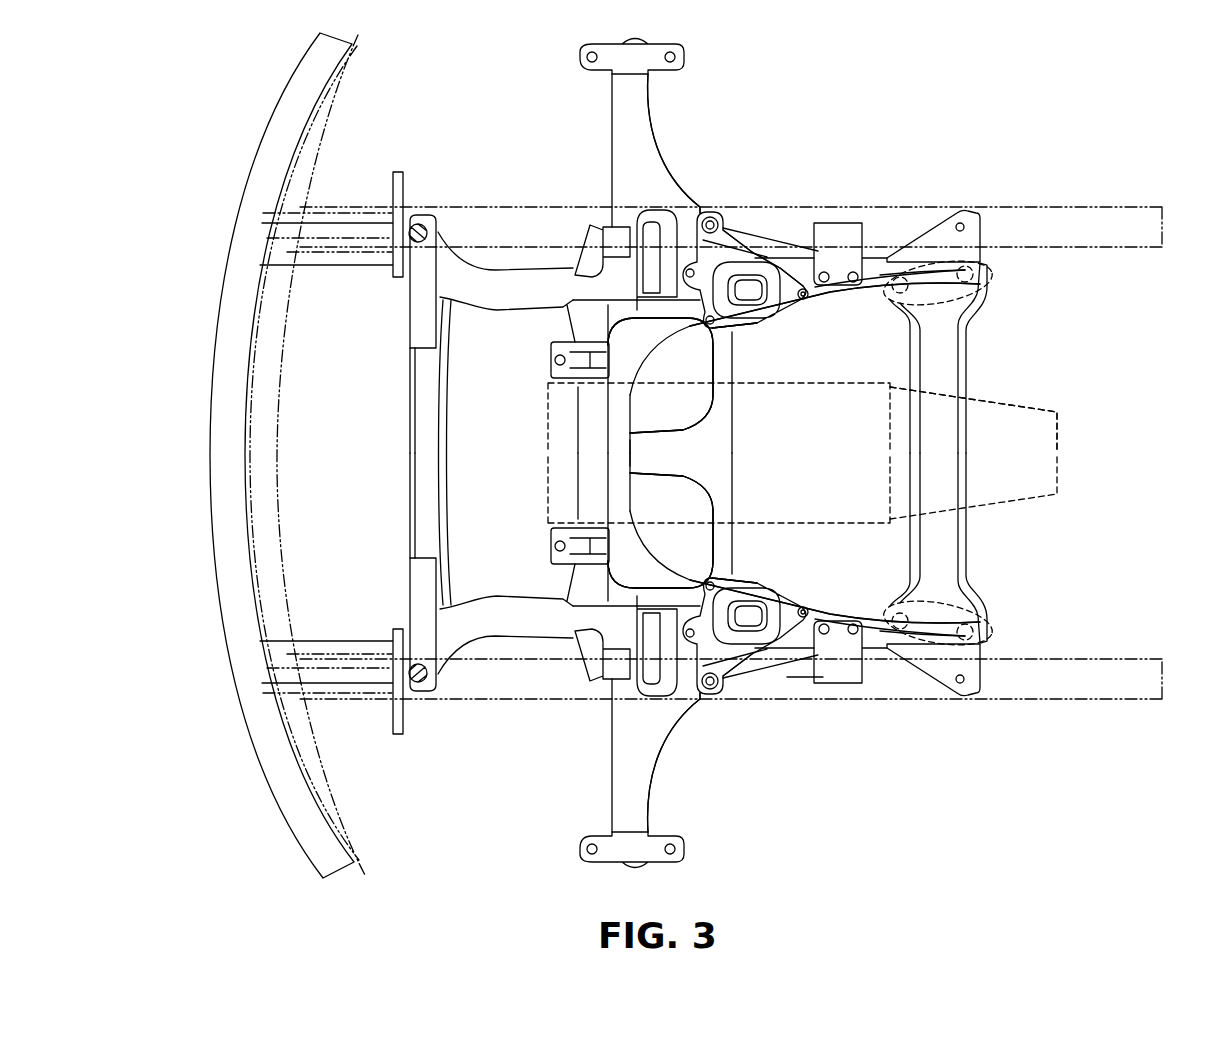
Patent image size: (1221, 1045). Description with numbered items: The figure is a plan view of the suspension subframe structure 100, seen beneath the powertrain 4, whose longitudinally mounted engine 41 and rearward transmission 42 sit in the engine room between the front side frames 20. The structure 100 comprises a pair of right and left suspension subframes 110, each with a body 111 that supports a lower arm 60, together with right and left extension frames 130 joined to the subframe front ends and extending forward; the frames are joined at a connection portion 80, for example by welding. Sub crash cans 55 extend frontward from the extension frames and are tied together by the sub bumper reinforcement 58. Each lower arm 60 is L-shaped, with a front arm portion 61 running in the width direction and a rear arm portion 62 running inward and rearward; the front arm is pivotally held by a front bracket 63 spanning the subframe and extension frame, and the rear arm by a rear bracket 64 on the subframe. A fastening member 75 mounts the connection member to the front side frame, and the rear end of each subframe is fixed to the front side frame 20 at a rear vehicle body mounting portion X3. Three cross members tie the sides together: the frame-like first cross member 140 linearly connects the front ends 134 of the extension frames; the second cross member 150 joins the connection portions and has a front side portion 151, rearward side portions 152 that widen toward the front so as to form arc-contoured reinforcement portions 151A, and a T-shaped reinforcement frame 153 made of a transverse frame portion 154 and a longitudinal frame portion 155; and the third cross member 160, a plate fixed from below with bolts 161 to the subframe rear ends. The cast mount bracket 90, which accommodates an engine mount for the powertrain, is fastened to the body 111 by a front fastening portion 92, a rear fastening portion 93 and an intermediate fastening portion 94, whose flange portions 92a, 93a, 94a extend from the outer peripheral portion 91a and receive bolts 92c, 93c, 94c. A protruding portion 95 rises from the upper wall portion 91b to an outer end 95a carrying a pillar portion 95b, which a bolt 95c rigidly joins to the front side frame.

The powertrain 4 is at (1047, 404).
The front side frame 20 is at (1120, 248).
The engine 41 is at (719, 453).
The transmission 42 is at (973, 453).
The sub crash can 55 is at (345, 220).
The sub bumper reinforcement 58 is at (210, 397).
The lower arm 60 is at (650, 100).
The front arm portion 61 is at (622, 722).
The rear arm portion 62 is at (807, 678).
The front bracket 63 is at (585, 228).
The rear bracket 64 is at (843, 228).
The fastening member 75 is at (418, 222).
The connection portion 80 is at (620, 622).
The mount bracket 90 is at (772, 233).
The outer peripheral portion 91a is at (803, 252).
The upper wall portion 91b is at (752, 318).
The front fastening portion 92 is at (698, 453).
The flange portion 92a is at (700, 205).
The bolt 92c is at (648, 228).
The rear fastening portion 93 is at (835, 453).
The flange portion 93a is at (797, 595).
The bolt 93c is at (810, 303).
The intermediate fastening portion 94 is at (714, 453).
The flange portion 94a is at (735, 338).
The bolt 94c is at (700, 333).
The protruding portion 95 is at (766, 262).
The outer end 95a is at (710, 210).
The pillar portion 95b is at (733, 240).
The bolt 95c is at (752, 232).
The suspension subframe structure 100 is at (1026, 134).
The suspension subframe 110 is at (875, 315).
The body 111 is at (842, 300).
The extension frame 130 is at (497, 269).
The front end 134 is at (440, 247).
The first cross member 140 is at (400, 456).
The second cross member 150 is at (568, 460).
The front side portion 151 is at (575, 415).
The reinforcement portion 151A is at (633, 366).
The side portion 152 is at (570, 325).
The reinforcement frame 153 is at (730, 432).
The transverse frame portion 154 is at (732, 448).
The longitudinal frame portion 155 is at (652, 457).
The third cross member 160 is at (975, 348).
The bolt 161 is at (990, 292).
The rear vehicle body mounting portion X3 is at (955, 205).